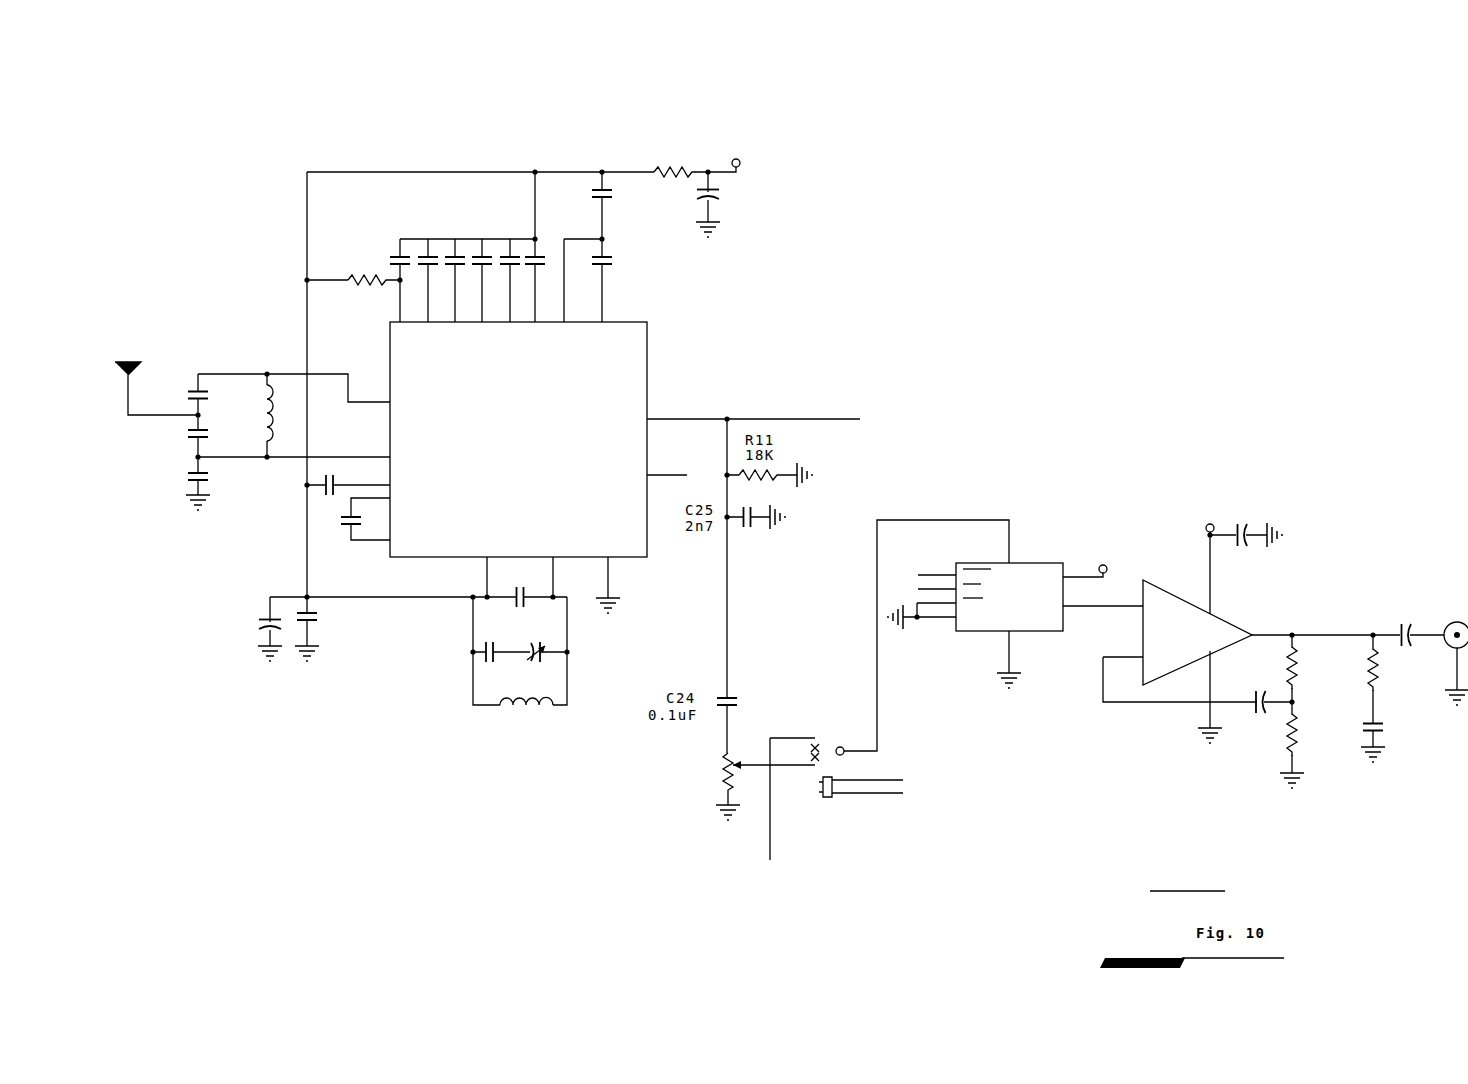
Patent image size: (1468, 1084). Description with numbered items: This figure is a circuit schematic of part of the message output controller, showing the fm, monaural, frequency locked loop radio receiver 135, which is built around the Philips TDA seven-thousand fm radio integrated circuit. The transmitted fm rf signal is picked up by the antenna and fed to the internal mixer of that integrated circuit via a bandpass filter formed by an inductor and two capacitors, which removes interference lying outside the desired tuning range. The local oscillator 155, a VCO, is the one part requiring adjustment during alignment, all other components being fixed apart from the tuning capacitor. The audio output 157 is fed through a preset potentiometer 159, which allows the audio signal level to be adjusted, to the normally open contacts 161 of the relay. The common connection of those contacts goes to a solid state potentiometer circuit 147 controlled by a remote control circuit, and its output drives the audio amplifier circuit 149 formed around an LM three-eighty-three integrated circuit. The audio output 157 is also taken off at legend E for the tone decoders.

The fm, monaural, frequency locked loop (FLL) radio receiver 135 is at (817, 186).
The potentiometer 147 is at (1035, 521).
The audio amplifier circuit 149 is at (1195, 497).
The local oscillator 155 is at (456, 716).
The audio output 157 is at (803, 419).
The preset potentiometer 159 is at (725, 765).
The normally open contacts 161 is at (790, 767).